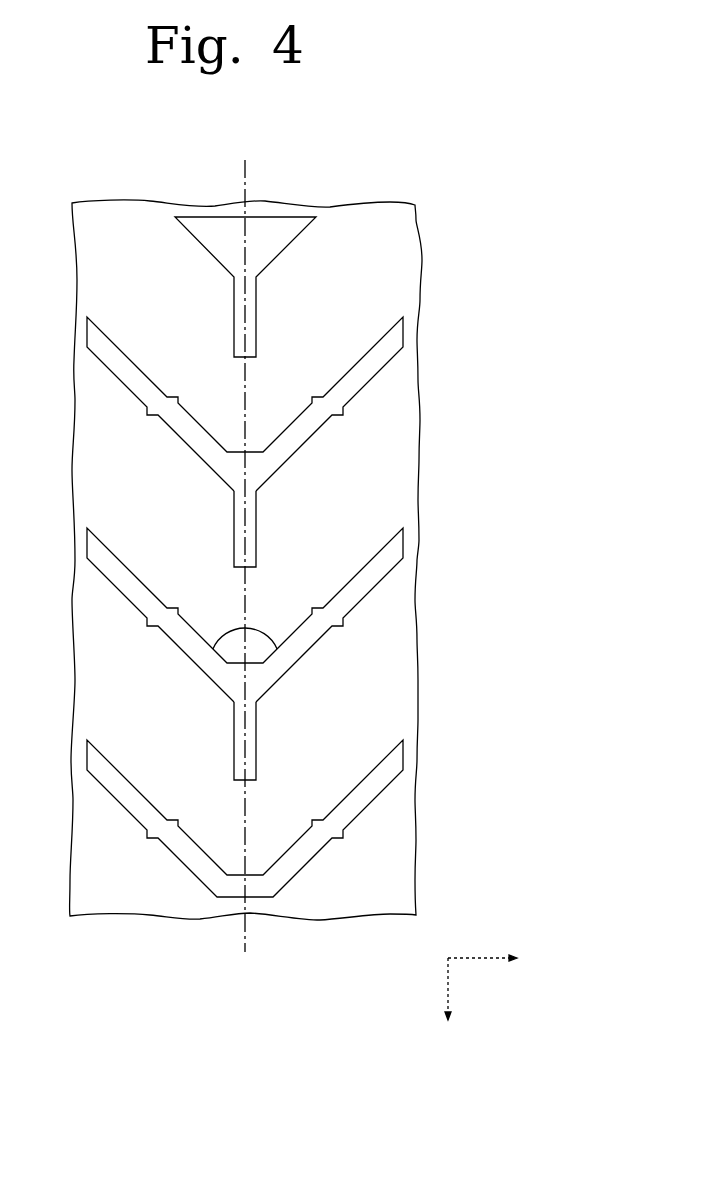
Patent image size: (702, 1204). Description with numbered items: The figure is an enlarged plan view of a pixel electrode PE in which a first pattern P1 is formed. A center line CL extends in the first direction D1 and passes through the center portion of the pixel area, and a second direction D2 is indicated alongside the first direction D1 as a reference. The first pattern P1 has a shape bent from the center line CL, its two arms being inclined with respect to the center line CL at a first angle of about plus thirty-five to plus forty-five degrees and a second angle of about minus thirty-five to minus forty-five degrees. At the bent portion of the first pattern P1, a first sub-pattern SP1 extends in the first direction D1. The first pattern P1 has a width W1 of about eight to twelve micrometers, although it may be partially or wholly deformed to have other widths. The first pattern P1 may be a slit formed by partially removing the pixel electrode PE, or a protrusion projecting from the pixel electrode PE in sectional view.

The pixel electrode PE is at (410, 192).
The first pattern P1 is at (355, 615).
The first sub-pattern SP1 is at (258, 722).
The width W1 is at (361, 784).
The center line CL is at (242, 571).
The first direction D1 is at (447, 1005).
The second direction D2 is at (496, 958).